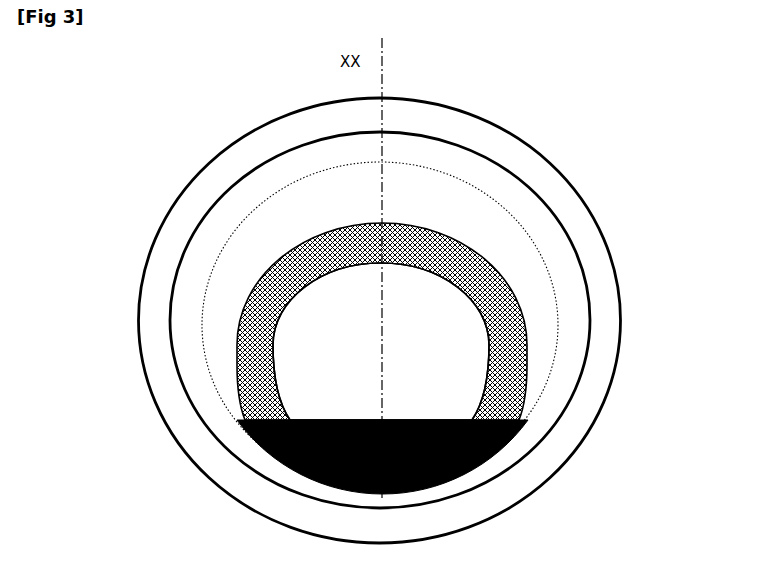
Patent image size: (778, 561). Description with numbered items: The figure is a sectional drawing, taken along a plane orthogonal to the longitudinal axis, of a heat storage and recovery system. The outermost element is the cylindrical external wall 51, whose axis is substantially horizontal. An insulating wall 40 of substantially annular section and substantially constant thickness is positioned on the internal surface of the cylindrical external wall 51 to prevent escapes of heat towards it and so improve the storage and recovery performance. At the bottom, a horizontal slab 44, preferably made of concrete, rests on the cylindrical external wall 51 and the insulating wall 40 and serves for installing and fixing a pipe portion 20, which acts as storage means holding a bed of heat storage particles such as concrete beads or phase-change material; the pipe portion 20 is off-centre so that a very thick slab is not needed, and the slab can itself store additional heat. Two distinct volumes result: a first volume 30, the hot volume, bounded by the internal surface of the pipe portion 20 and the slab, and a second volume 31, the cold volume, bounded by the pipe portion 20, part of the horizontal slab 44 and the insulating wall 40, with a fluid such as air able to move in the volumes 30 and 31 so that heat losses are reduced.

The cylindrical external wall 51 is at (555, 170).
The insulating wall 40 is at (303, 158).
The second volume 31 is at (364, 194).
The pipe portion 20 is at (249, 298).
The first volume 30 is at (318, 352).
The horizontal slab 44 is at (284, 462).